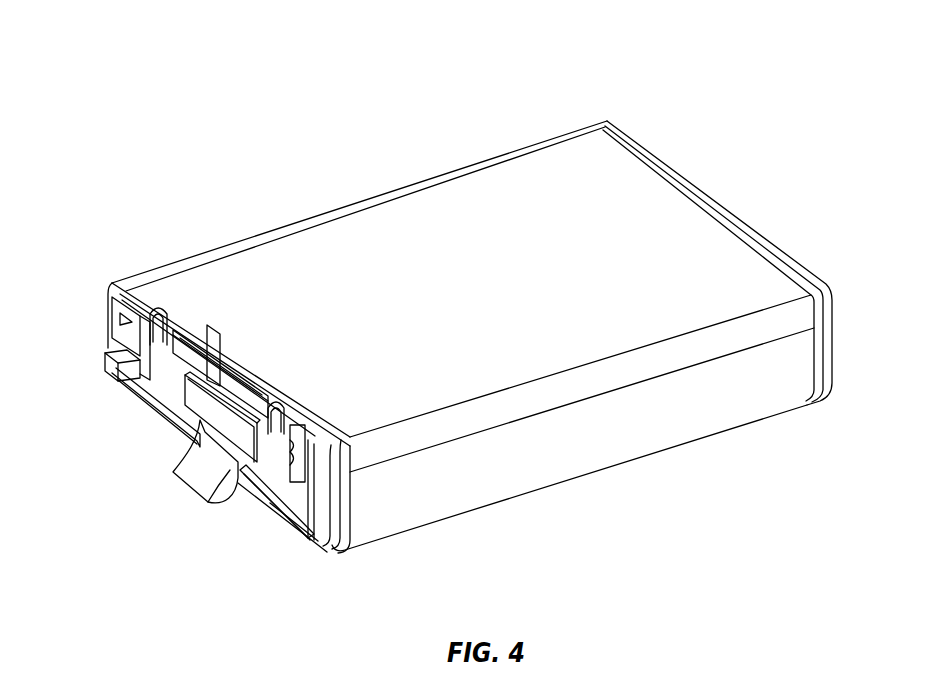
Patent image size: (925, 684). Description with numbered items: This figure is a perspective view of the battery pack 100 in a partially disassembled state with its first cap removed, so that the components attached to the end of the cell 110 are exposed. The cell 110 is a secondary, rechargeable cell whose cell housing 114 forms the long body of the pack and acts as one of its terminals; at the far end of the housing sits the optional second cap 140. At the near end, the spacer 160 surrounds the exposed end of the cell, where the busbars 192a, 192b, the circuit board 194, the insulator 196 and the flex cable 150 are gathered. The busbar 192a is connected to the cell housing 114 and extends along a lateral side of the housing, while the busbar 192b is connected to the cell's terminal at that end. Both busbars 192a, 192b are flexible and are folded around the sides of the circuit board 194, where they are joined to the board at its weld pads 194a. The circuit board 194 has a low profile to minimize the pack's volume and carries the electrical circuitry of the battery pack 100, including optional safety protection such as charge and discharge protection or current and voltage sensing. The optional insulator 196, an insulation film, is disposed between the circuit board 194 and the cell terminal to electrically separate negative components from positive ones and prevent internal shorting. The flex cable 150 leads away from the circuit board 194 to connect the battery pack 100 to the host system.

The battery pack 100 is at (622, 95).
The cell 110 is at (745, 412).
The cell housing 114 is at (420, 203).
The second cap 140 is at (827, 350).
The flex cable 150 is at (203, 487).
The spacer 160 is at (113, 286).
The busbar 192a is at (120, 335).
The busbar 192b is at (272, 430).
The circuit board 194 is at (113, 374).
The weld pads 194a is at (177, 387).
The insulator 196 is at (227, 383).